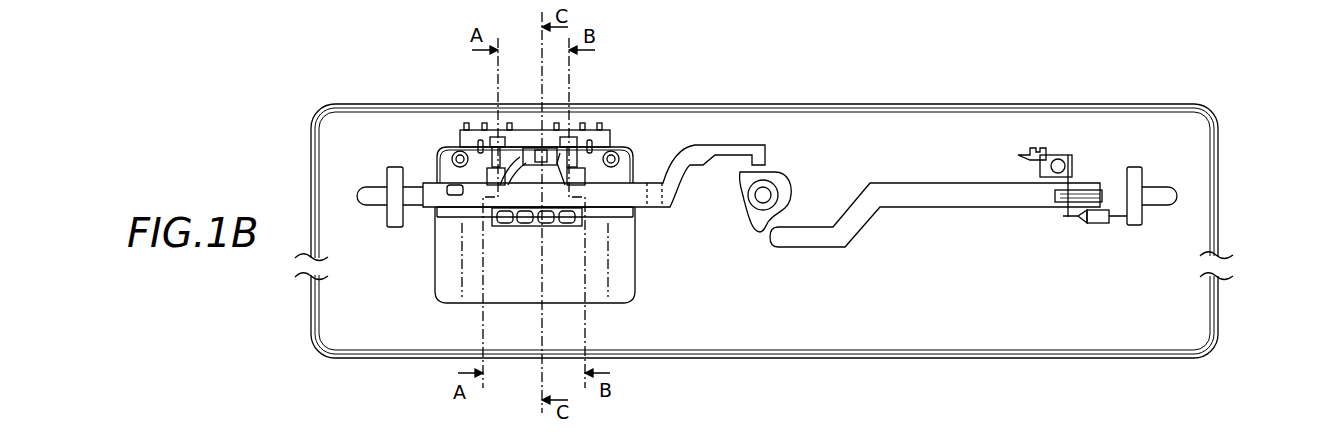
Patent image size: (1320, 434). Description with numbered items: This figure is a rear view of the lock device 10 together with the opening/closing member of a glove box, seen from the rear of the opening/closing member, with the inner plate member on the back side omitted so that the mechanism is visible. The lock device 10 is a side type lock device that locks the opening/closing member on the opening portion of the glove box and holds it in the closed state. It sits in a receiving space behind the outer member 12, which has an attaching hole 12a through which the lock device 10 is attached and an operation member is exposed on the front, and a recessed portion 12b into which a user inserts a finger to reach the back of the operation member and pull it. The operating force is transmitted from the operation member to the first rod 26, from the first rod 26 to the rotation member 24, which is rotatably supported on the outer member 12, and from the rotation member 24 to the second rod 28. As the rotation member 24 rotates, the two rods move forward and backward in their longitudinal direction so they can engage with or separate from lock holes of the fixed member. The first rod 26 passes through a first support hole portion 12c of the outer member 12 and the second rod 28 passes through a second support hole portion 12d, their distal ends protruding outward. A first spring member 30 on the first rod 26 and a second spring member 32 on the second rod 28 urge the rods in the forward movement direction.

The lock device 10 is at (592, 130).
The outer member 12 is at (1181, 128).
The attaching hole 12a is at (636, 158).
The recessed portion 12b is at (525, 283).
The first support hole portion 12c is at (395, 167).
The second support hole portion 12d is at (1142, 172).
The rotation member 24 is at (778, 185).
The first rod 26 is at (676, 194).
The second rod 28 is at (955, 190).
The first spring member 30 is at (445, 147).
The second spring member 32 is at (1068, 155).